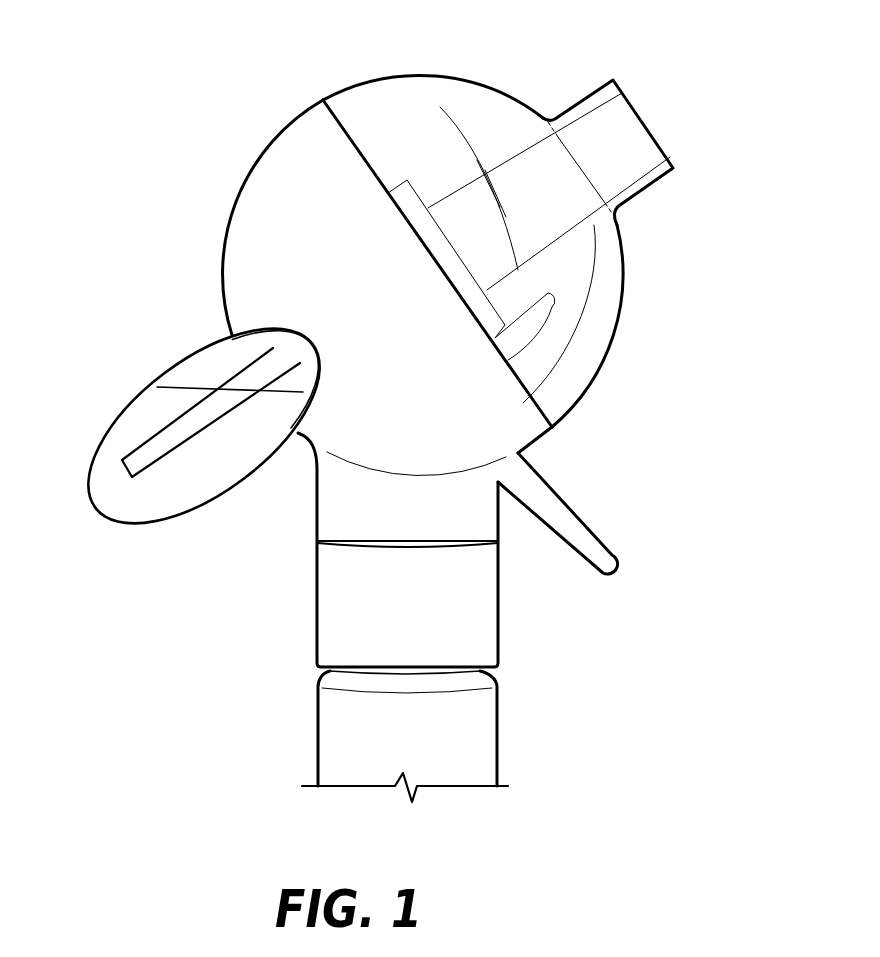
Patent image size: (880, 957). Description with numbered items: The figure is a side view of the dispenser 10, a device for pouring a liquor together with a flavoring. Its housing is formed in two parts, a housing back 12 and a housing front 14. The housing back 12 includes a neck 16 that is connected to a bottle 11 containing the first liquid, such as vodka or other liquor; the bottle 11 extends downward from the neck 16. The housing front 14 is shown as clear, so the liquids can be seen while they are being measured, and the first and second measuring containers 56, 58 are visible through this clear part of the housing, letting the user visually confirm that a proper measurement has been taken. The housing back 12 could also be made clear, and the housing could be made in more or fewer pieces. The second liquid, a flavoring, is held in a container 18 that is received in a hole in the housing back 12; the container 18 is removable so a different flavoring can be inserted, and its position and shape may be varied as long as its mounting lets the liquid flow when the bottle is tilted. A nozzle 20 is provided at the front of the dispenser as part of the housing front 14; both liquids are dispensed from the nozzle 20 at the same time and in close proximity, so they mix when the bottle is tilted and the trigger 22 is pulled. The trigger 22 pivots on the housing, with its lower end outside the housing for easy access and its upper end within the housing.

The dispenser 10 is at (193, 121).
The bottle 11 is at (338, 728).
The housing back 12 is at (223, 247).
The housing front 14 is at (487, 82).
The neck 16 is at (500, 577).
The container 18 is at (93, 517).
The nozzle 20 is at (667, 155).
The trigger 22 is at (598, 535).
The first measuring container 56 is at (392, 98).
The second measuring container 58 is at (563, 220).